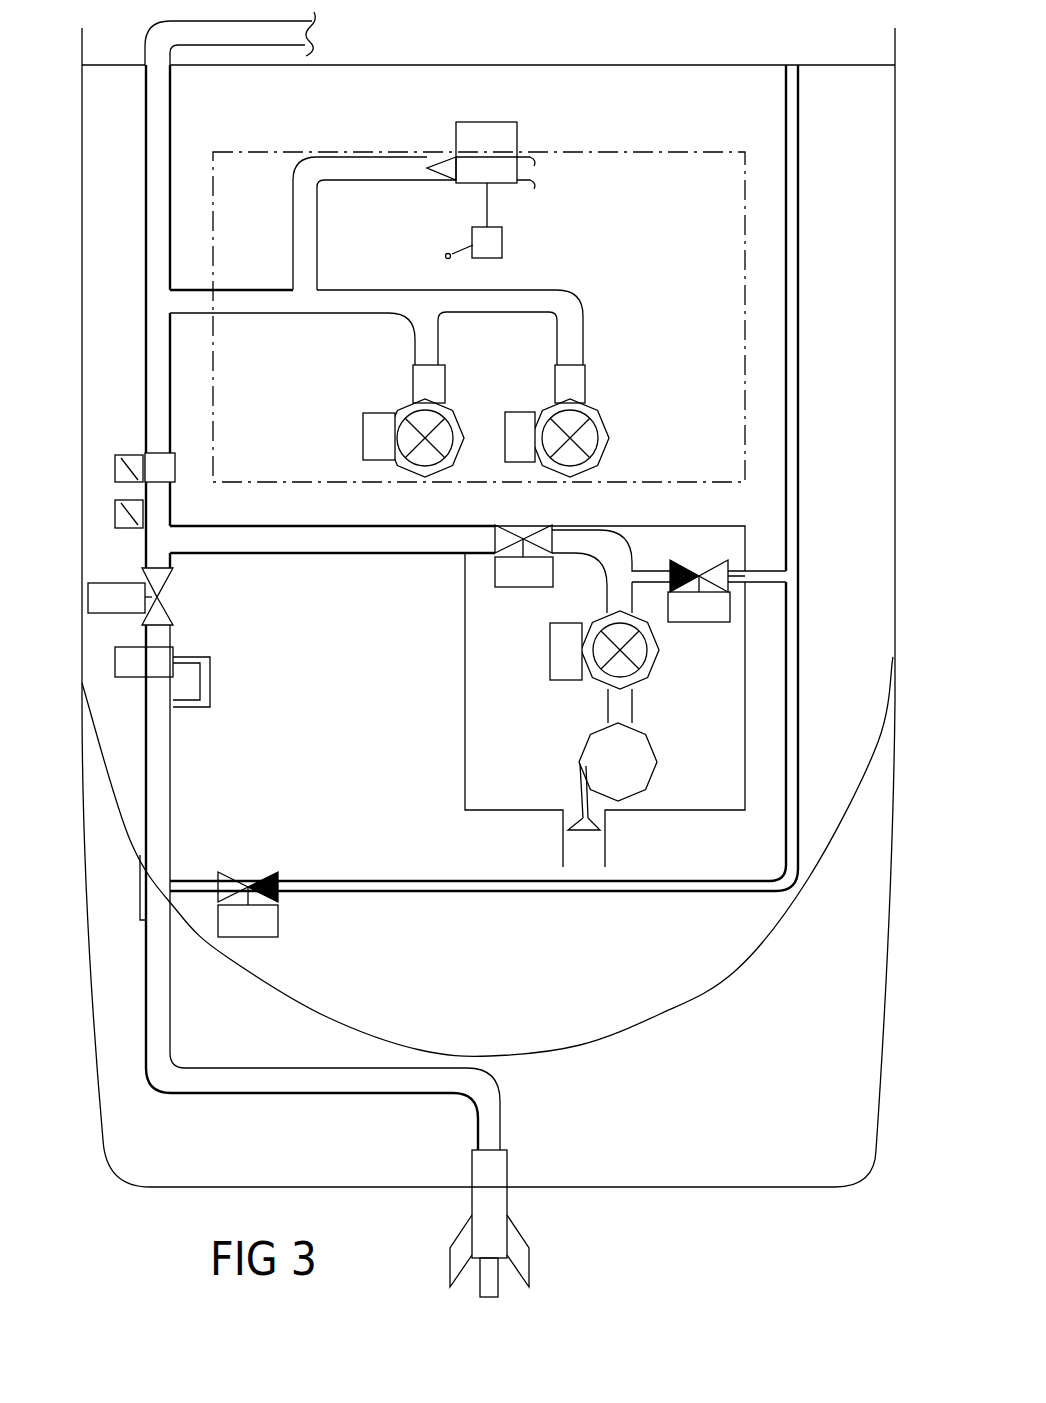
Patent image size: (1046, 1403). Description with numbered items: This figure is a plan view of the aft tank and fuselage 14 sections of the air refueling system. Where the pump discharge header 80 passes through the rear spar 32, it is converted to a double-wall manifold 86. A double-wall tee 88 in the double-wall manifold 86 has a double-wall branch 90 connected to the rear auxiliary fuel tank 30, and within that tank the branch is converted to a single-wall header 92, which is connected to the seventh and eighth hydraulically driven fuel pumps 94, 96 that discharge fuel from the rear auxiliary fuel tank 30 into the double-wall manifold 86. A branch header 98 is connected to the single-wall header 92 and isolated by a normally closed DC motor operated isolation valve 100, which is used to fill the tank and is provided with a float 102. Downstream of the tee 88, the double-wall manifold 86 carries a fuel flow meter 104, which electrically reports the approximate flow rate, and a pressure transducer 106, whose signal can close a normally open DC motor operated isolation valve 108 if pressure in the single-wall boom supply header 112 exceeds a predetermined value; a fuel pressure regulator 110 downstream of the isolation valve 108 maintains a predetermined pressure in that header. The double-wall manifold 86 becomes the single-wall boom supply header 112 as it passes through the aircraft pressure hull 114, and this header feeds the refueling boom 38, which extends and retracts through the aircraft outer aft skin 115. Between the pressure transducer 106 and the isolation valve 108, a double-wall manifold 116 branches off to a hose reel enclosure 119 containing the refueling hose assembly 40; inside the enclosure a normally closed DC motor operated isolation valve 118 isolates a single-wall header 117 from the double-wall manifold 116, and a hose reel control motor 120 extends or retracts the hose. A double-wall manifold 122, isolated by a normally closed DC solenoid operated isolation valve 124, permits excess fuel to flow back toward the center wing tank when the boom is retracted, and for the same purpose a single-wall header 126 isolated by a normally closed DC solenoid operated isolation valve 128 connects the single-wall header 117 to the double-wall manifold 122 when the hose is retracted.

The fuselage 14 is at (83, 385).
The rear auxiliary fuel tank 30 is at (745, 362).
The rear spar 32 is at (715, 64).
The refueling boom 38 is at (470, 1200).
The refueling hose assembly 40 is at (652, 767).
The pump discharge header 80 is at (308, 33).
The double-wall manifold 86 is at (158, 175).
The double-wall tee 88 is at (160, 303).
The double-wall branch 90 is at (192, 305).
The single-wall header 92 is at (545, 300).
The seventh hydraulically driven fuel pump 94 is at (405, 418).
The eighth hydraulically driven fuel pump 96 is at (598, 410).
The branch header 98 is at (390, 168).
The DC motor operated isolation valve 100 is at (510, 162).
The float 102 is at (490, 245).
The fuel flow meter 104 is at (137, 460).
The pressure transducer 106 is at (137, 518).
The DC motor operated isolation valve 108 is at (160, 612).
The fuel pressure regulator 110 is at (165, 652).
The single-wall boom supply header 112 is at (160, 1015).
The aircraft pressure hull 114 is at (736, 968).
The aircraft outer aft skin 115 is at (665, 1190).
The double-wall manifold 116 is at (325, 540).
The single-wall header 117 is at (618, 597).
The DC motor operated isolation valve 118 is at (508, 540).
The hose reel enclosure 119 is at (745, 685).
The hose reel control motor 120 is at (657, 663).
The double-wall manifold 122 is at (792, 195).
The DC solenoid operated isolation valve 124 is at (228, 872).
The single-wall header 126 is at (653, 575).
The DC solenoid operated isolation valve 128 is at (705, 578).